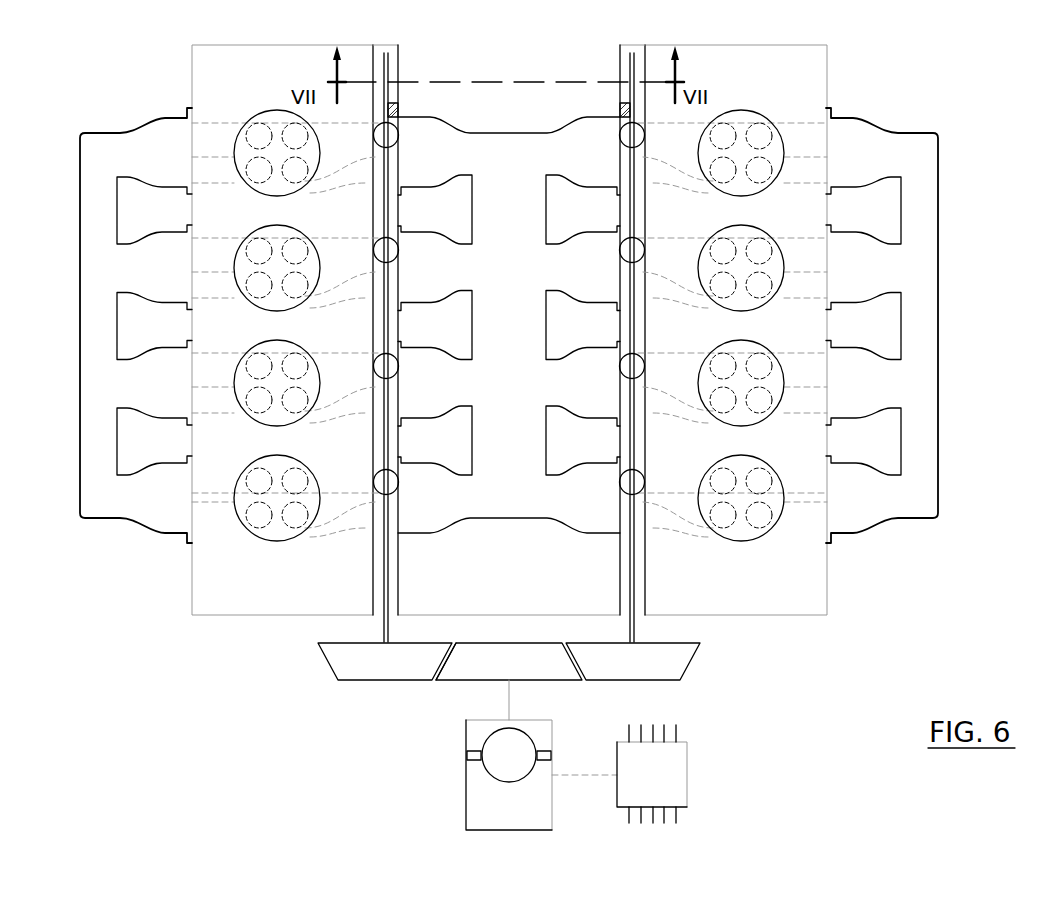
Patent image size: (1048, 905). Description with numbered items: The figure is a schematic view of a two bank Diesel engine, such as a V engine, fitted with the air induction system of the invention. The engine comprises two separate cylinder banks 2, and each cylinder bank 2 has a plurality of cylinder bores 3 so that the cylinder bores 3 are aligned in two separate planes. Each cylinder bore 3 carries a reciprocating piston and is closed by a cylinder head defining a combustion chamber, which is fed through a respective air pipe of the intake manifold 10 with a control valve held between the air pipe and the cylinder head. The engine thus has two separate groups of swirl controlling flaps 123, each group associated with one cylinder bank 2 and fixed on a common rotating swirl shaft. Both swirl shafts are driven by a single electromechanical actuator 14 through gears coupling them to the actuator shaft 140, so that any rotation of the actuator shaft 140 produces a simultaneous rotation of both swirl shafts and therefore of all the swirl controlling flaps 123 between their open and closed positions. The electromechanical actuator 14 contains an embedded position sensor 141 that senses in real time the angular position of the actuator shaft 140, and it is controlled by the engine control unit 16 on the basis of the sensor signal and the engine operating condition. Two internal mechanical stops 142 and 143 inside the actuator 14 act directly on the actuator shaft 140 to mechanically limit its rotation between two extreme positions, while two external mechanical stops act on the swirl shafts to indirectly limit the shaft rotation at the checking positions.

The cylinder bank 2 is at (248, 58).
The cylinder bore 3 is at (246, 116).
The intake manifold 10 is at (512, 155).
The electromechanical actuator 14 is at (483, 818).
The engine control unit 16 is at (660, 772).
The swirl controlling flap 123 is at (399, 138).
The actuator shaft 140 is at (509, 697).
The position sensor 141 is at (512, 763).
The internal mechanical stop 142 is at (543, 756).
The internal mechanical stop 143 is at (467, 757).